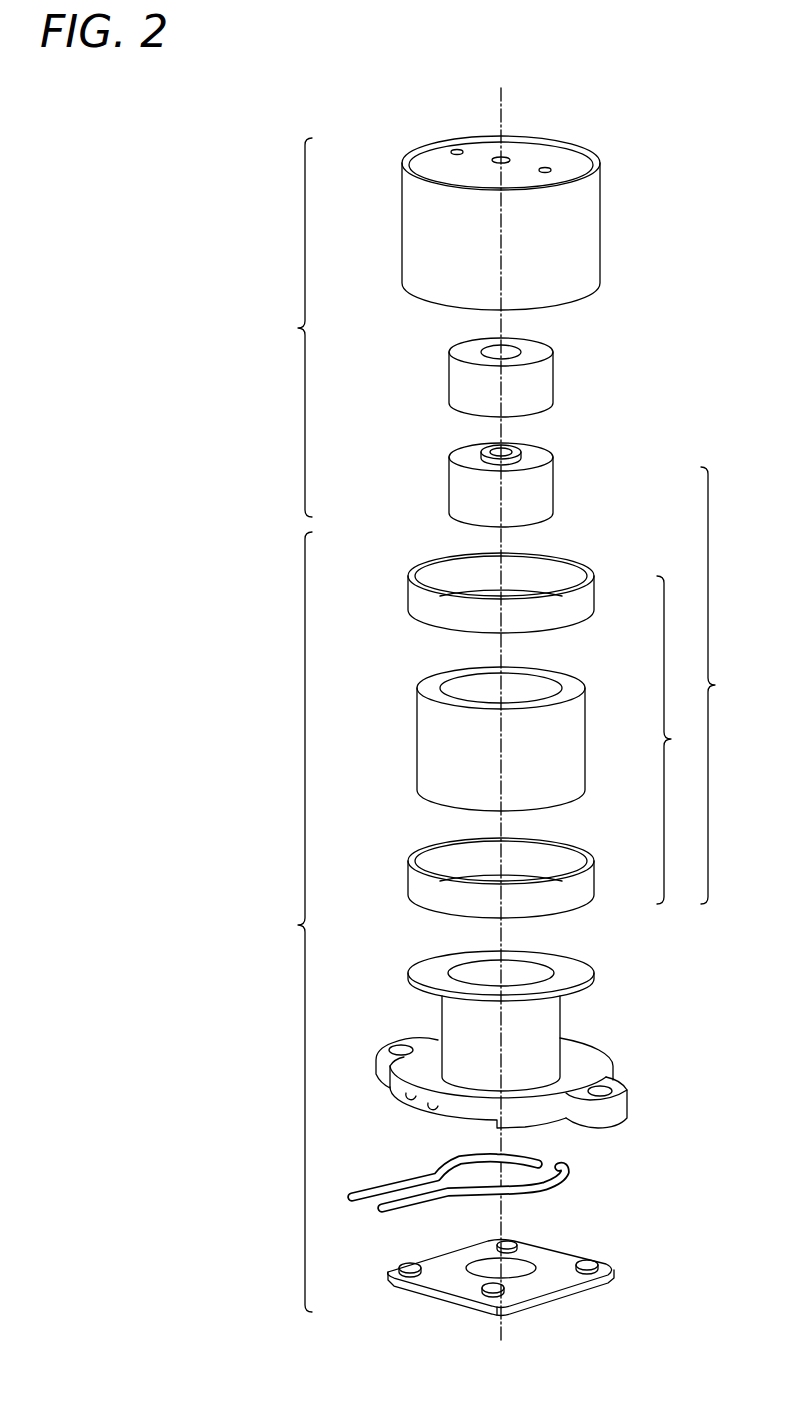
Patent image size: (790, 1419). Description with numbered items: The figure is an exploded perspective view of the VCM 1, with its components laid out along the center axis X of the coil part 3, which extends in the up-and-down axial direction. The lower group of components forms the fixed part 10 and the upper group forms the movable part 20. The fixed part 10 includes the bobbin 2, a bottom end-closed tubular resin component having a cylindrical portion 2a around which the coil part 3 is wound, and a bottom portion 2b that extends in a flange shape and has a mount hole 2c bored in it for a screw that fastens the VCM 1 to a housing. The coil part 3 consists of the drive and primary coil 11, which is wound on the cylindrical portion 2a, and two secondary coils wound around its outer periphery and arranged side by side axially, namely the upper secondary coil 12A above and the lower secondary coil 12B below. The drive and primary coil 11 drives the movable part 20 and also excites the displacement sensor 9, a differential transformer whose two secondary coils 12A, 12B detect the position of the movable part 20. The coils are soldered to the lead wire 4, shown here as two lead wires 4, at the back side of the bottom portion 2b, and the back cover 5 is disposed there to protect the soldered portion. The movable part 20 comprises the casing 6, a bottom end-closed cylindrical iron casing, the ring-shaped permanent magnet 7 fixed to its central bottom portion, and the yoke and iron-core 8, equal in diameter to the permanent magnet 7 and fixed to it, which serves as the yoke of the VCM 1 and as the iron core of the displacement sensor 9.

The VCM 1 is at (653, 122).
The bobbin 2 is at (596, 978).
The cylindrical portion 2a is at (561, 1021).
The bottom portion 2b is at (629, 1109).
The mount hole 2c is at (608, 1085).
The coil part 3 is at (673, 740).
The lead wire 4 is at (572, 1177).
The back cover 5 is at (613, 1275).
The casing 6 is at (601, 227).
The permanent magnet 7 is at (554, 377).
The yoke and iron-core 8 is at (554, 483).
The displacement sensor 9 is at (717, 685).
The fixed part 10 is at (291, 922).
The drive and primary coil 11 is at (587, 739).
The upper secondary coil 12A is at (595, 598).
The lower secondary coil 12B is at (595, 882).
The movable part 20 is at (291, 327).
The center axis X is at (504, 100).